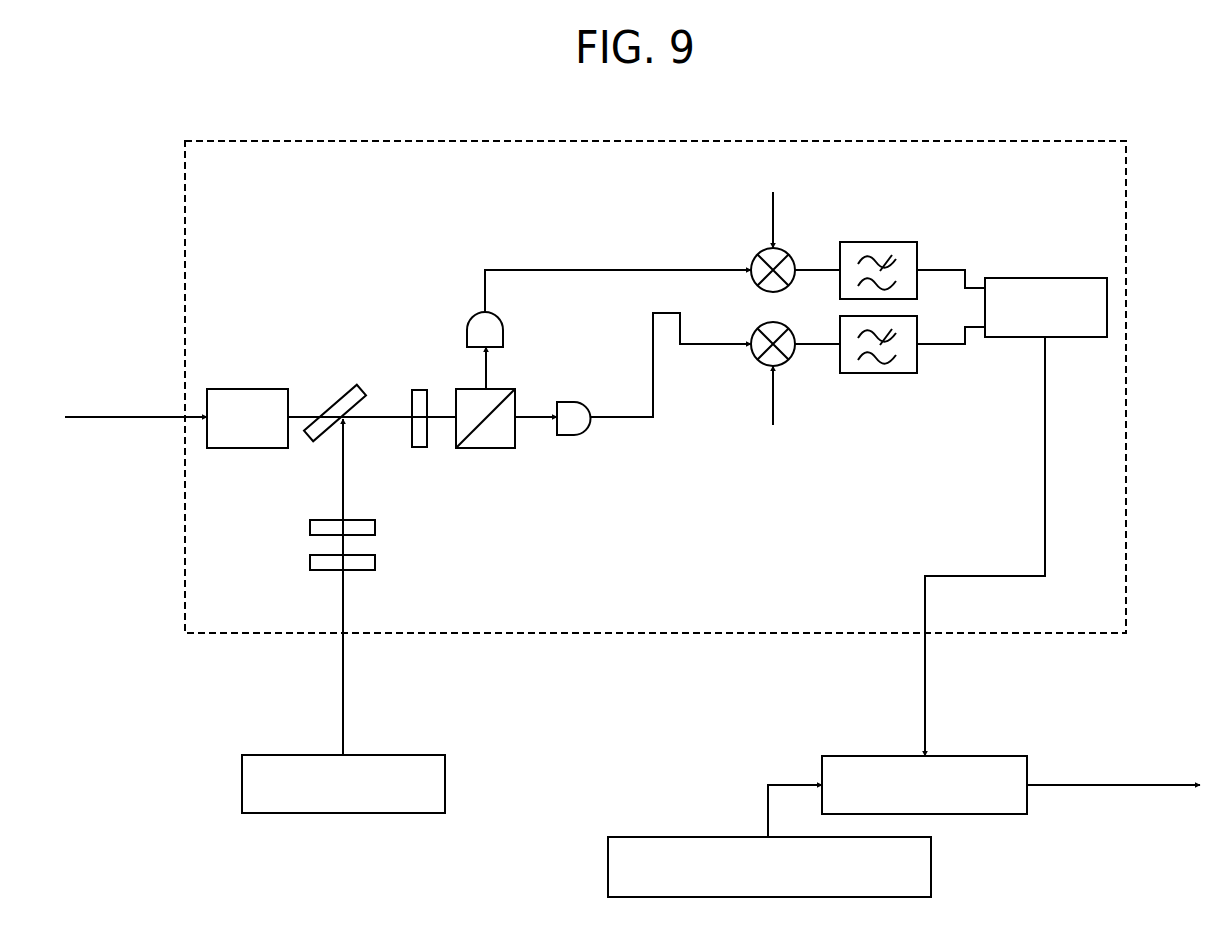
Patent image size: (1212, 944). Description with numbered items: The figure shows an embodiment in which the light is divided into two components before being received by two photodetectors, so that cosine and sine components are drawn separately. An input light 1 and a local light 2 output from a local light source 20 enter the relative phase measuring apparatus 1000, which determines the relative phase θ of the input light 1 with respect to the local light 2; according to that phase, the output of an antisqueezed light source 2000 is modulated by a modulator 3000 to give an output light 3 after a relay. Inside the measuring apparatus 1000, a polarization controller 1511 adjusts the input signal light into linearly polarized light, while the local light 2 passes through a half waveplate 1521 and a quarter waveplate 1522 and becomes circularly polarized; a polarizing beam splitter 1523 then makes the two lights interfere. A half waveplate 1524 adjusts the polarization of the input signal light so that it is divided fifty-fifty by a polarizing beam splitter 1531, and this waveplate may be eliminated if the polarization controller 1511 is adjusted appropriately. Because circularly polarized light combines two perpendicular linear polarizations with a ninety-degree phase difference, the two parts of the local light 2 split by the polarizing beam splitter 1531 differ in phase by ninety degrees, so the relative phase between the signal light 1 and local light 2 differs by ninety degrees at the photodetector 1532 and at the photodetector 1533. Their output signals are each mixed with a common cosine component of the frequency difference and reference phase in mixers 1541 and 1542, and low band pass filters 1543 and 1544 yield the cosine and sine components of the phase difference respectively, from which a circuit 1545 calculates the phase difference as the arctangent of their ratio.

The input light 1 is at (107, 423).
The local light 2 is at (343, 675).
The output light 3 is at (1133, 783).
The local light source 20 is at (242, 777).
The relative phase measuring apparatus 1000 is at (767, 115).
The antisqueezed light source 2000 is at (608, 875).
The modulator 3000 is at (983, 756).
The polarization controller 1511 is at (242, 388).
The half waveplate 1521 is at (375, 562).
The λ/4 waveplate 1522 is at (375, 527).
The polarizing beam splitter 1523 is at (338, 390).
The half waveplate 1524 is at (418, 380).
The polarizing beam splitter 1531 is at (493, 433).
The photodetector 1532 is at (578, 437).
The photodetector 1533 is at (477, 313).
The mixer 1541 is at (763, 250).
The mixer 1542 is at (763, 363).
The low band pass filter 1543 is at (917, 242).
The low band pass filter 1544 is at (903, 375).
The circuit 1545 is at (1047, 278).